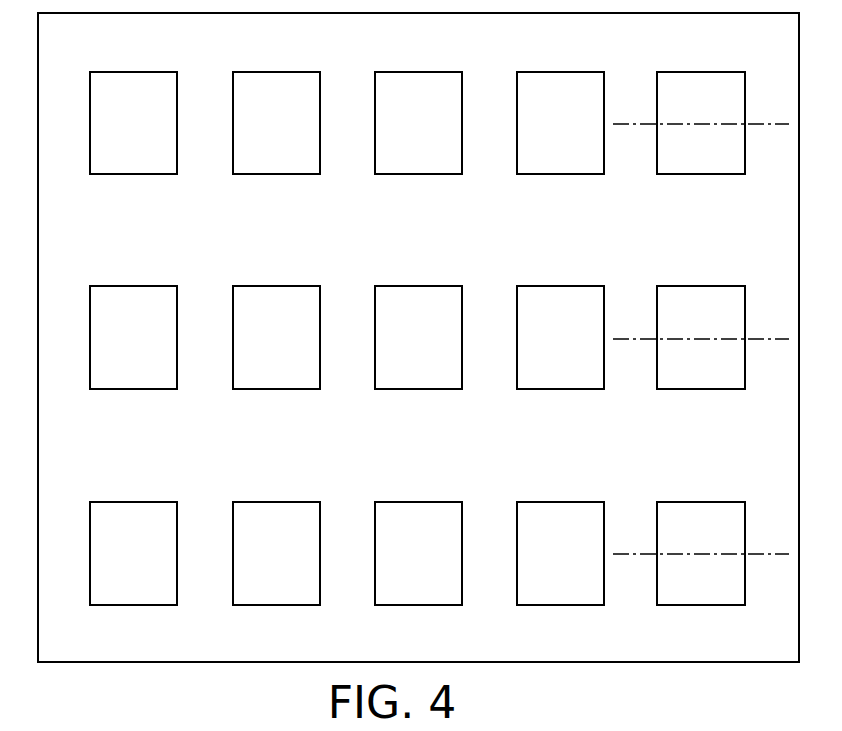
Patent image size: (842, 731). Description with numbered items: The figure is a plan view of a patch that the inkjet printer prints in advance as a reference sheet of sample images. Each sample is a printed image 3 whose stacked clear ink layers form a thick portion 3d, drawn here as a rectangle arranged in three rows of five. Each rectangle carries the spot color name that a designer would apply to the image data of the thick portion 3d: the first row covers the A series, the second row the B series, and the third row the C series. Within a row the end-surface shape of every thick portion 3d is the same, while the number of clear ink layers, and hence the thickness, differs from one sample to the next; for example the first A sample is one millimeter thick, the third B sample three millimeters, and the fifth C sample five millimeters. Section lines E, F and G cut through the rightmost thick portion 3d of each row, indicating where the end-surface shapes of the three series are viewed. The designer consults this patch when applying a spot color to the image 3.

The image 3 is at (336, 13).
The thick portion 3d is at (417, 329).
The section line E- E is at (641, 130).
The section line F- F is at (641, 345).
The section line G- G is at (641, 560).